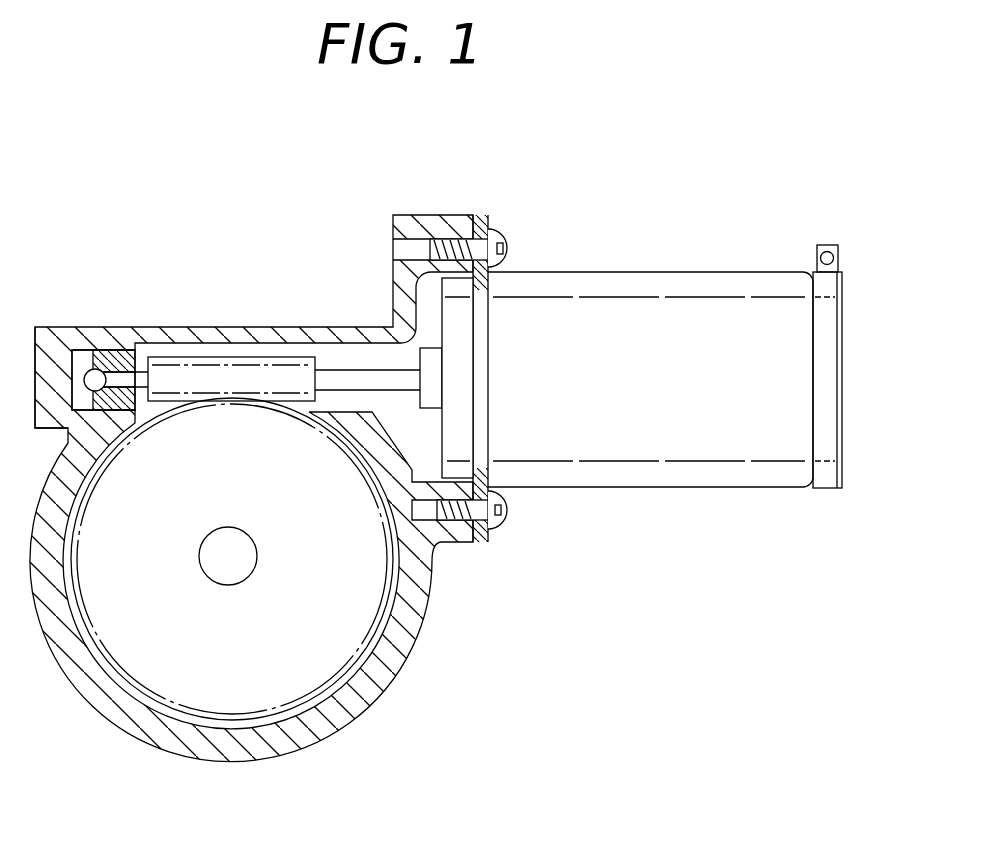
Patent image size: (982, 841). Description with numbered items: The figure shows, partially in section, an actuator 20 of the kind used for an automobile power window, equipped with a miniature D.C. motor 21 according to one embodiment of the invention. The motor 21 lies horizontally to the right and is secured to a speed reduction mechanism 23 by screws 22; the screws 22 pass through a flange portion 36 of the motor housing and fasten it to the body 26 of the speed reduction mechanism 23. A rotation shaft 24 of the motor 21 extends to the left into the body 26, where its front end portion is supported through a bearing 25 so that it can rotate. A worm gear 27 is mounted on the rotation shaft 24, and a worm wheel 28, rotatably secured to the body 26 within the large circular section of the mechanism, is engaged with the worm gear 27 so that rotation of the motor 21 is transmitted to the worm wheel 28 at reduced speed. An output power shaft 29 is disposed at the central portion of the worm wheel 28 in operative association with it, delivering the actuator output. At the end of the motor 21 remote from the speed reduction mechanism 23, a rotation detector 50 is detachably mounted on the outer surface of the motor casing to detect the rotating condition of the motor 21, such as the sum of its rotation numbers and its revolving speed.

The actuator 20 is at (580, 656).
The miniature D.C. motor 21 is at (736, 255).
The screws 22 is at (505, 233).
The speed reduction mechanism 23 is at (220, 224).
The rotation shaft 24 is at (327, 370).
The bearing 25 is at (125, 350).
The body 26 is at (63, 327).
The worm gear 27 is at (210, 357).
The worm wheel 28 is at (308, 655).
The output power shaft 29 is at (255, 572).
The flange portion 36 is at (478, 215).
The rotation detector 50 is at (847, 303).